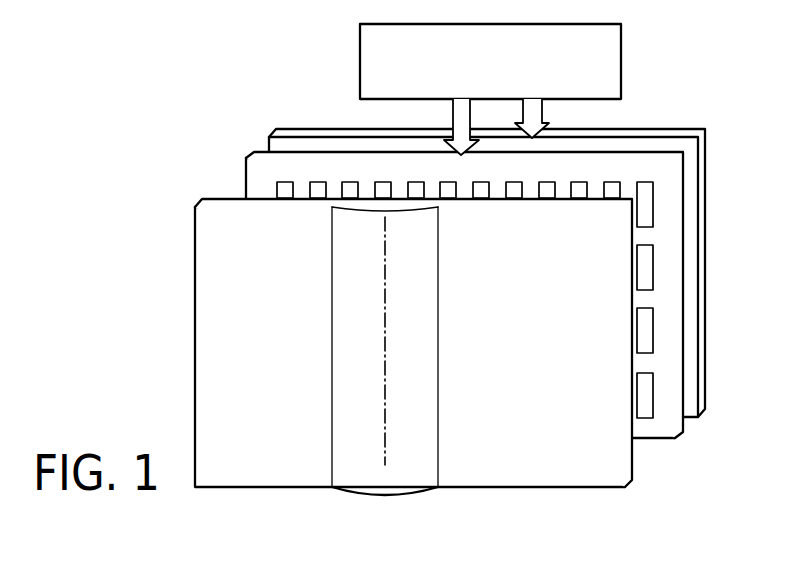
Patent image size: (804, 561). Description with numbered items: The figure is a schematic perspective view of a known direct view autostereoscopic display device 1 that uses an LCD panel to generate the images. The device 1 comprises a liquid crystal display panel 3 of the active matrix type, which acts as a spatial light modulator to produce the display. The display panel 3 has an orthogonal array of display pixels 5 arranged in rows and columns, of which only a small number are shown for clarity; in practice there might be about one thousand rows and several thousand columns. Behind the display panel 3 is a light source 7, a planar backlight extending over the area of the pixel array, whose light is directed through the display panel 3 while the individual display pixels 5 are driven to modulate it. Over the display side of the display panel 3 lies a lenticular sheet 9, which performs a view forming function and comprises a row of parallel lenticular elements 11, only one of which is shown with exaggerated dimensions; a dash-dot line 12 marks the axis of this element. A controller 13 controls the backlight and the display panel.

The autostereoscopic display device 1 is at (194, 109).
The liquid crystal display panel 3 is at (683, 432).
The display pixels 5 is at (645, 267).
The light source 7 is at (705, 409).
The lenticular sheet 9 is at (632, 478).
The lenticular elements 11 is at (384, 482).
The center line / bending axis 12 is at (384, 368).
The controller 13 is at (510, 72).